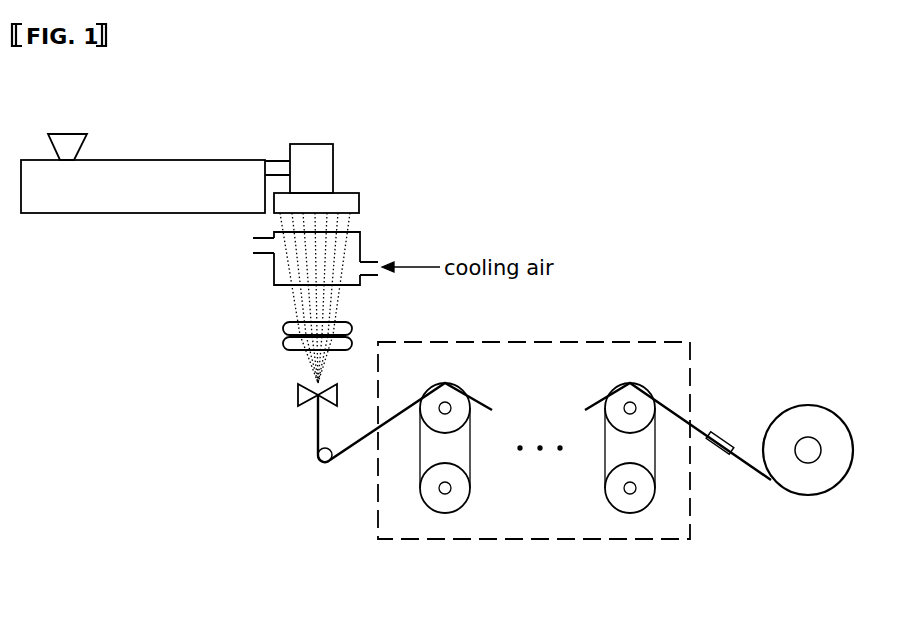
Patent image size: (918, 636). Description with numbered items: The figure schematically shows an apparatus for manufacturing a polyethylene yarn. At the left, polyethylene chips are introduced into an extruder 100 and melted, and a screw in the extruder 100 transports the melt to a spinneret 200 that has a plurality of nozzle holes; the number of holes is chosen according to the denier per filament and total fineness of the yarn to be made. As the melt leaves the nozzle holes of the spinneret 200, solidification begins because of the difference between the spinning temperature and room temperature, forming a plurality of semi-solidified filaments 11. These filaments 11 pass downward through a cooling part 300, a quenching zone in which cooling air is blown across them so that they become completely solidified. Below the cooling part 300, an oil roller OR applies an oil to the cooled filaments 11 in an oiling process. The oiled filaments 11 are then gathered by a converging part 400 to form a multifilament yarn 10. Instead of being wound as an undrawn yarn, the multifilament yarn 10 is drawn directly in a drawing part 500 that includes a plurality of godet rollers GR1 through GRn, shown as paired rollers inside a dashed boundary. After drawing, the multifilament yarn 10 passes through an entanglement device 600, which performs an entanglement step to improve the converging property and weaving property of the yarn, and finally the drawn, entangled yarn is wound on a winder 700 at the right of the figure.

The extruder 100 is at (147, 178).
The spinneret 200 is at (361, 200).
The cooling part 300 is at (361, 240).
The filaments 11 is at (300, 310).
The oil roller OR is at (283, 328).
The converging part 400 is at (297, 395).
The multifilament yarn 10 is at (318, 435).
The drawing part 500 is at (603, 342).
The godet roller GR1 is at (447, 516).
The godet roller GRn is at (632, 516).
The entanglement device 600 is at (722, 432).
The winder 700 is at (822, 407).